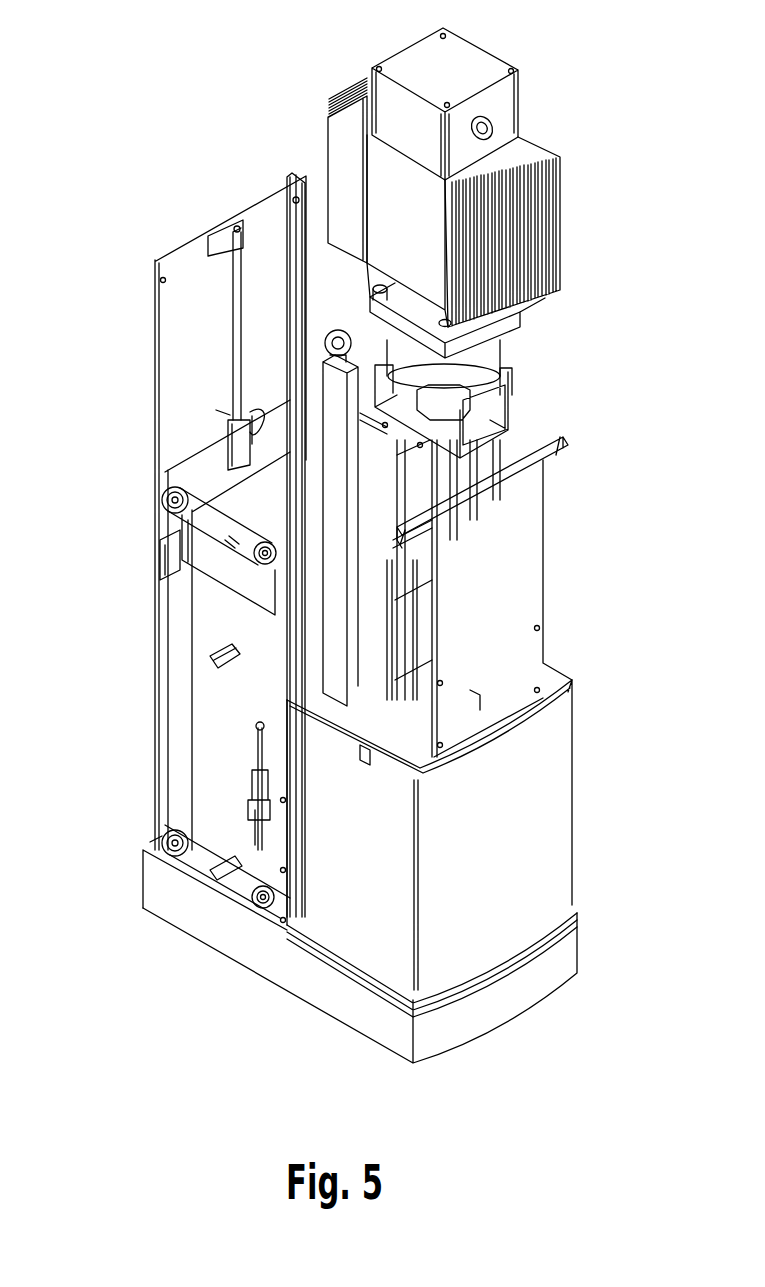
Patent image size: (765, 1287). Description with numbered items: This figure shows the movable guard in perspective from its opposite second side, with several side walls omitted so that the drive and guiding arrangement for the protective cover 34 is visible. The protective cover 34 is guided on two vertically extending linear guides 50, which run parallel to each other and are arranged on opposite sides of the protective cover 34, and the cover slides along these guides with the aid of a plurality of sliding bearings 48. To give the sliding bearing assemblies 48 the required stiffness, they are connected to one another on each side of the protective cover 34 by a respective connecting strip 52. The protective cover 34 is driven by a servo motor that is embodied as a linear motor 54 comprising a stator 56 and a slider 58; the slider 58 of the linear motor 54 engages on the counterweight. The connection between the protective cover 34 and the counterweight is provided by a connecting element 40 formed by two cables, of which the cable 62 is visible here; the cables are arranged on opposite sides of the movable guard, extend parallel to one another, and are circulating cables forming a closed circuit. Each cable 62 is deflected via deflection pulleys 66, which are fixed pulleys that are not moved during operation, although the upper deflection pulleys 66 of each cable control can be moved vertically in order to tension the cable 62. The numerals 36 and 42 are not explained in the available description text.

The protective cover 34 is at (555, 852).
The switch 36 is at (159, 415).
The connecting element 40 is at (180, 513).
The deflection roller 42 is at (165, 551).
The sliding bearings 48 is at (282, 683).
The linear guides 50 is at (285, 462).
The connecting strip 52 is at (270, 748).
The linear motor 54 is at (225, 412).
The stator 56 is at (233, 436).
The slider 58 is at (237, 333).
The cable 62 is at (168, 654).
The deflection pulleys 66 is at (165, 500).